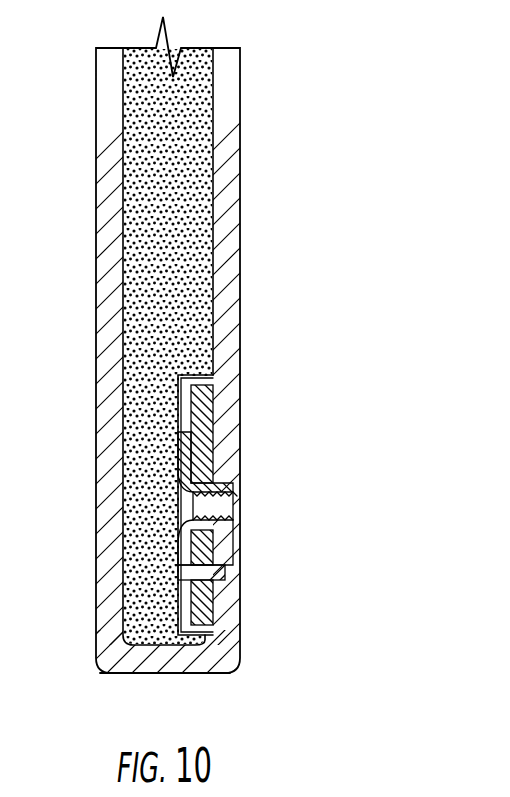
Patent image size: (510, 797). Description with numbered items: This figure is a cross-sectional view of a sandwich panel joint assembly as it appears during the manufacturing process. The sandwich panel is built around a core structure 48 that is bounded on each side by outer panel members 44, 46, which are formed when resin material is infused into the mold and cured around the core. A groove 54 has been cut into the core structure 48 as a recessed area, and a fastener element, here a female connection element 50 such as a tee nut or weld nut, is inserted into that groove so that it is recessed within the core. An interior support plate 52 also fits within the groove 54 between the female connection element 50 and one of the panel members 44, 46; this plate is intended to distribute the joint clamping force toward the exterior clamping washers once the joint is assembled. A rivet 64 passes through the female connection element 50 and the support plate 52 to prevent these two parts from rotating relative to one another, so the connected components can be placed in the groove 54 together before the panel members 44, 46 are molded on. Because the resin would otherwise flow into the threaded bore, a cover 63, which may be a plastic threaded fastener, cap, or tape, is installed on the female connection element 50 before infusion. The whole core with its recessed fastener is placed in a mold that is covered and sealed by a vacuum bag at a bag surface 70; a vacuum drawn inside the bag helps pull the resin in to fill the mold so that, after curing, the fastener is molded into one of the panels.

The panel member 44 is at (98, 312).
The panel member 46 is at (225, 244).
The core structure 48 is at (182, 252).
The female connection element 50 is at (205, 470).
The interior support plate 52 is at (213, 405).
The groove 54 is at (205, 380).
The cover 63 is at (235, 512).
The rivet 64 is at (222, 578).
The bag surface 70 is at (137, 673).